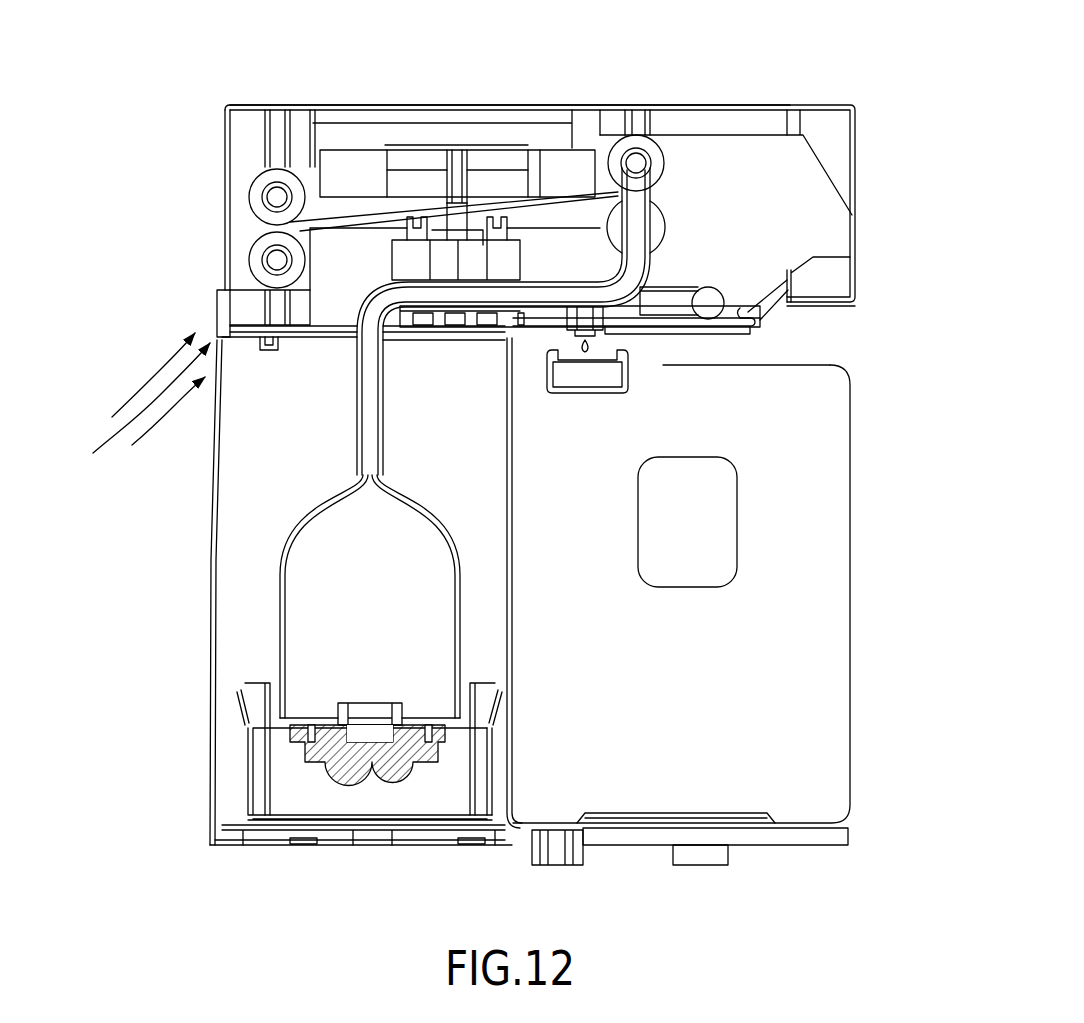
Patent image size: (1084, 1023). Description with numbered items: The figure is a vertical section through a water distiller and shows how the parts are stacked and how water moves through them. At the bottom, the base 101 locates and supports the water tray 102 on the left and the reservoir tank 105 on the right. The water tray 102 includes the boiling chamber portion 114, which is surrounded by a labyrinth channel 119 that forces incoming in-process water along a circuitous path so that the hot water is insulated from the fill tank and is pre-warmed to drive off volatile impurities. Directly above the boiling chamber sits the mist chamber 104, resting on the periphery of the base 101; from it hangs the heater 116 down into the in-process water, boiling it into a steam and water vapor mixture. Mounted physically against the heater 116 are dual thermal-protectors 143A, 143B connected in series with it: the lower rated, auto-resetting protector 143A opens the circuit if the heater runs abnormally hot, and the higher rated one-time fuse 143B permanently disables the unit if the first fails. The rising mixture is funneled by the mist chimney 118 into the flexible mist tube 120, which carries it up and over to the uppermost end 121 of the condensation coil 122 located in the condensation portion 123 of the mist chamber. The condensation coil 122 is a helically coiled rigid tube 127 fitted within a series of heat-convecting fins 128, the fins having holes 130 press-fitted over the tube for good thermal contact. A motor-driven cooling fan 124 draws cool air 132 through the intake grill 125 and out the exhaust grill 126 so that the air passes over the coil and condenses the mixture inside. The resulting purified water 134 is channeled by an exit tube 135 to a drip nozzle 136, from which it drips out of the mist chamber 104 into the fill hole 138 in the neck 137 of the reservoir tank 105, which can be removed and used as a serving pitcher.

The base 101 is at (212, 838).
The water tray 102 is at (233, 756).
The mist chamber 104 is at (224, 125).
The reservoir tank 105 is at (852, 432).
The boiling chamber portion 114 is at (439, 795).
The heater 116 is at (332, 787).
The mist chimney 118 is at (277, 617).
The labyrinth channel 119 is at (240, 730).
The mist tube 120 is at (352, 418).
The uppermost end of condensation coil 121 is at (641, 150).
The condensation coil 122 is at (255, 200).
The condensation portion 123 is at (858, 198).
The cooling fan 124 is at (565, 142).
The intake grill 125 is at (213, 315).
The exhaust grill 126 is at (395, 103).
The rigid tube 127 is at (262, 210).
The heat-convecting fins 128 is at (257, 177).
The fin holes 130 is at (255, 253).
The cool air 132 is at (147, 383).
The purified water 134 is at (600, 343).
The exit tube 135 is at (700, 285).
The drip nozzle 136 is at (556, 342).
The neck 137 is at (635, 362).
The fill hole 138 is at (592, 395).
The lower rated thermal-protector 143A is at (355, 666).
The higher rated thermal-protector 143B is at (372, 703).